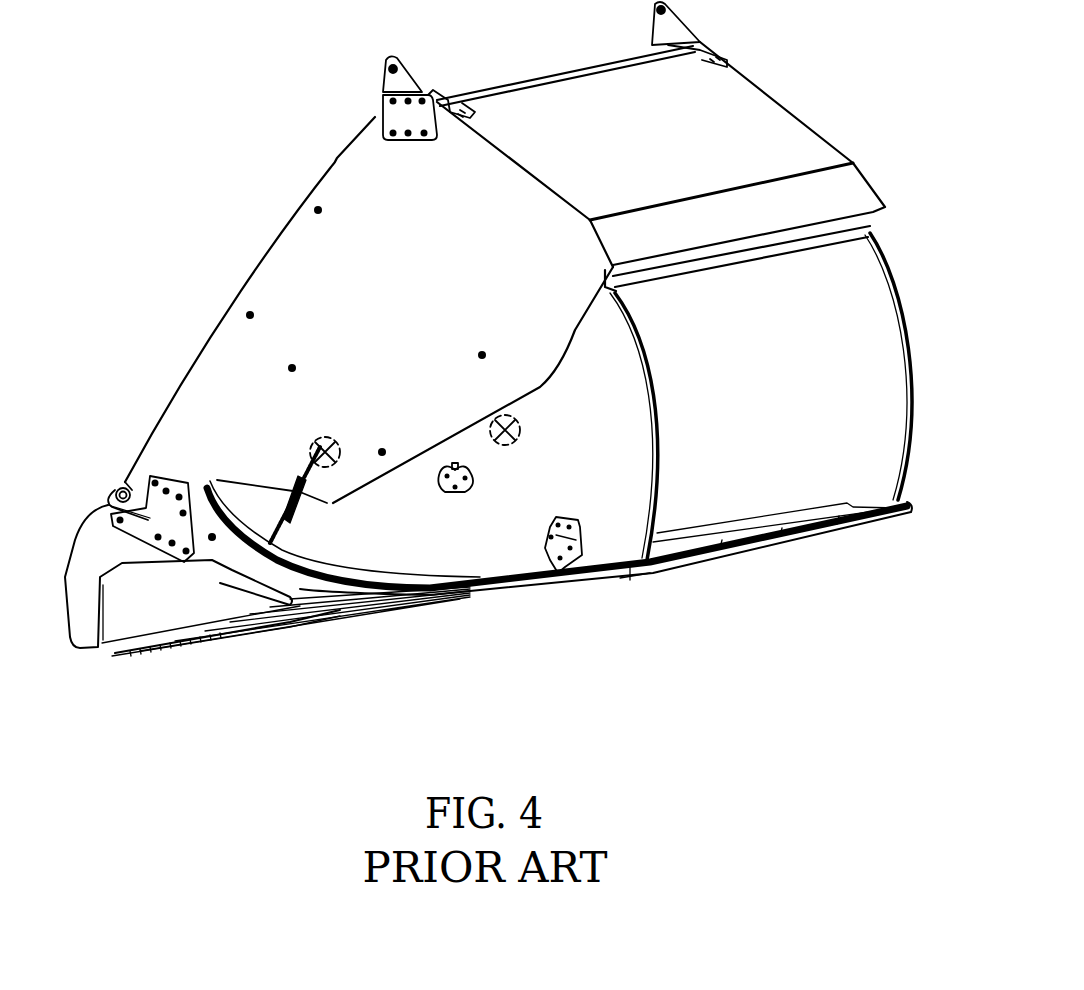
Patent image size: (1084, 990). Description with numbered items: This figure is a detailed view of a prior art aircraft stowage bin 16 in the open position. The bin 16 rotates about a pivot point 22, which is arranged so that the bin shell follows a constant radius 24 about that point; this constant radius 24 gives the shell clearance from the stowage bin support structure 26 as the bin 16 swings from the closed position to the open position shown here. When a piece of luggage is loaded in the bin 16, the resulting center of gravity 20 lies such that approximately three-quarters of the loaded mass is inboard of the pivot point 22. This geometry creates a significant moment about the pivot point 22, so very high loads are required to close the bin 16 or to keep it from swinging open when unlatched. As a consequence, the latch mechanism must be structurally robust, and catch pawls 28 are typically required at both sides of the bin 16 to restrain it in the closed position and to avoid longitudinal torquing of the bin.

The bin 16 is at (597, 587).
The center of gravity 20 is at (523, 427).
The pivot point 22 is at (333, 442).
The constant radius 24 is at (327, 503).
The stowage bin support structure 26 is at (160, 608).
The catch pawls 28 is at (553, 522).